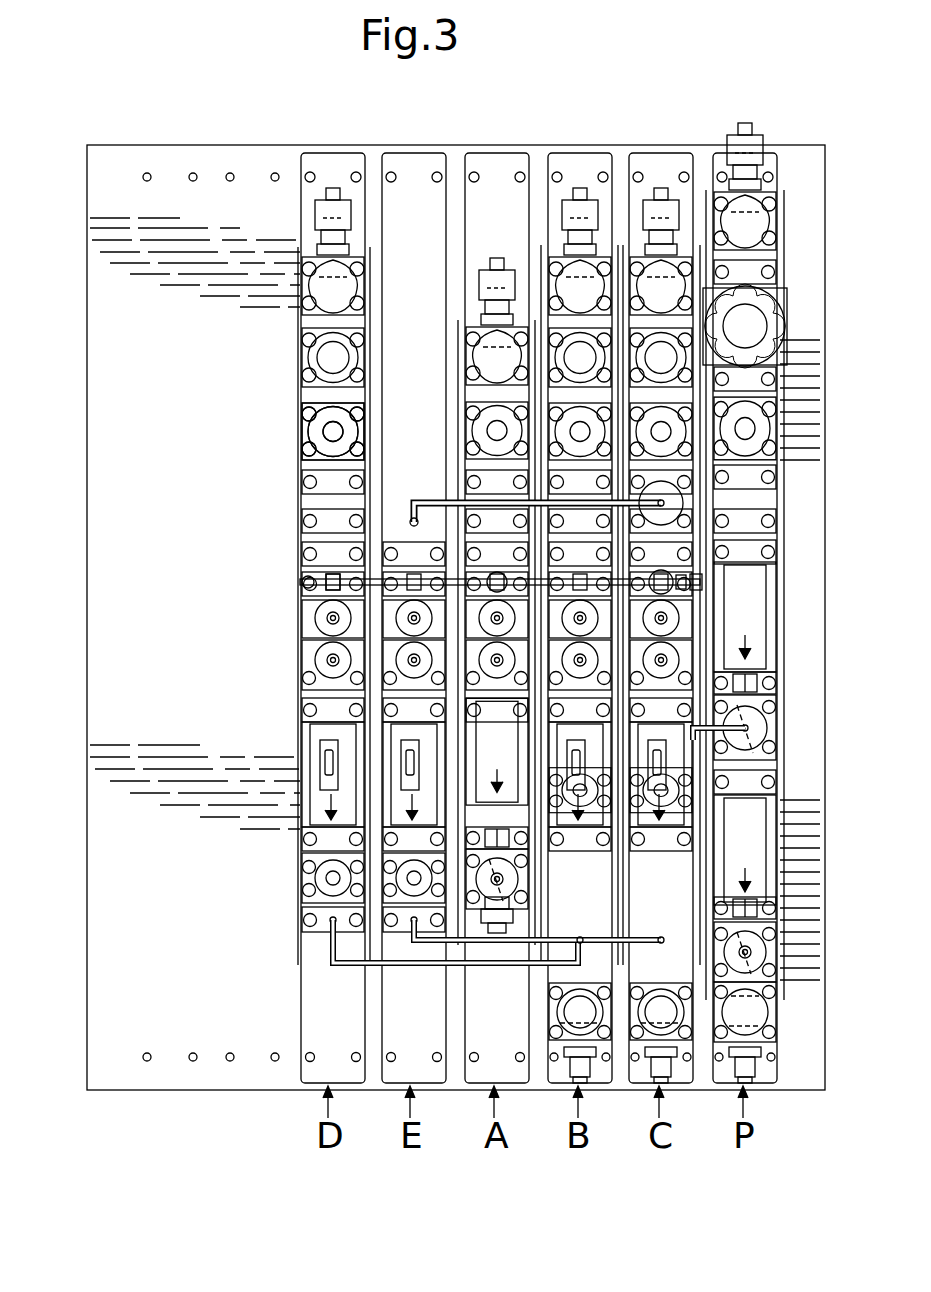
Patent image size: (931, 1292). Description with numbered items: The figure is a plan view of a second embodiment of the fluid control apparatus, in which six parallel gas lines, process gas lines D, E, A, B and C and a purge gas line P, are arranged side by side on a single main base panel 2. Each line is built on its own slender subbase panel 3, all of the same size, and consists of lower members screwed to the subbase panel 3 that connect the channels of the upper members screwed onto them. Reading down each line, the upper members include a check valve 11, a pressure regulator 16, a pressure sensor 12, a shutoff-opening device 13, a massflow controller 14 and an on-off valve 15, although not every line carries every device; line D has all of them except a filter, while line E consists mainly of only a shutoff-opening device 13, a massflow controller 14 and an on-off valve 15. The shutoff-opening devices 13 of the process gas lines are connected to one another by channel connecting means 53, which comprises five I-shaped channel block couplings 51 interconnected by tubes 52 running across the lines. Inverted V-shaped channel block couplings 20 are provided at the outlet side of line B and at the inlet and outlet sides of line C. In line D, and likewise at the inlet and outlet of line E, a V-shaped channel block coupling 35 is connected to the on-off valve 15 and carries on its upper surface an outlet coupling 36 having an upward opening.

The main base panel 2 is at (812, 790).
The subbase panel 3 is at (342, 163).
The check valve 11 is at (312, 270).
The pressure sensor 12 is at (325, 432).
The shutoff-opening device 13 is at (322, 618).
The massflow controller 14 is at (400, 738).
The on-off valve 15 is at (325, 878).
The pressure regulator 16 is at (325, 357).
The inverted V-shaped channel block coupling 20 is at (572, 950).
The V-shaped channel block coupling 35 is at (316, 920).
The outlet coupling 36 is at (333, 950).
The I-shaped channel block coupling 51 is at (302, 582).
The tube 52 is at (400, 578).
The channel connecting means 53 is at (342, 578).